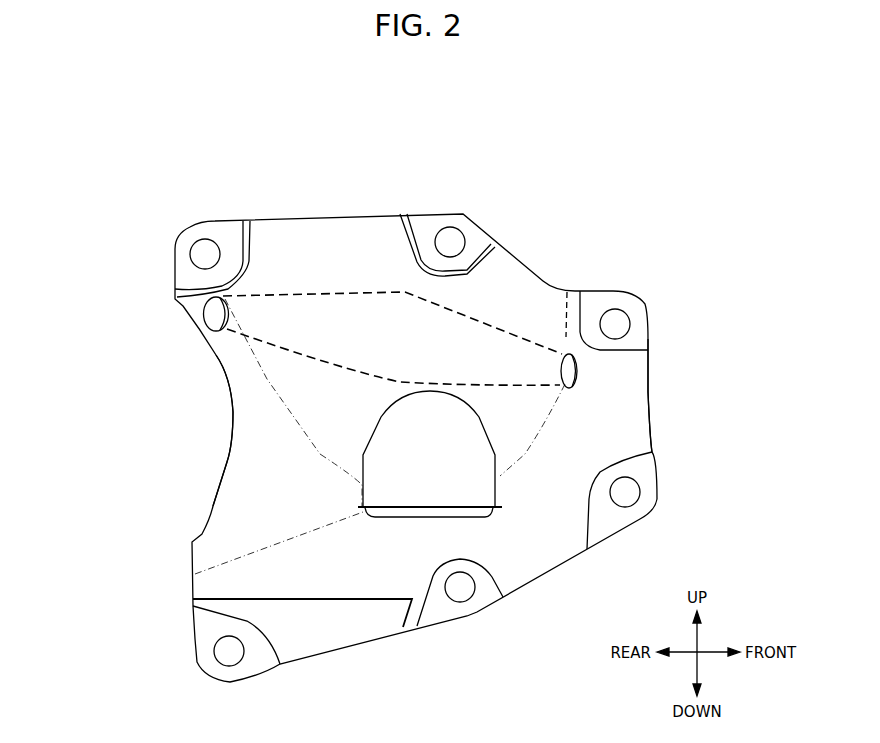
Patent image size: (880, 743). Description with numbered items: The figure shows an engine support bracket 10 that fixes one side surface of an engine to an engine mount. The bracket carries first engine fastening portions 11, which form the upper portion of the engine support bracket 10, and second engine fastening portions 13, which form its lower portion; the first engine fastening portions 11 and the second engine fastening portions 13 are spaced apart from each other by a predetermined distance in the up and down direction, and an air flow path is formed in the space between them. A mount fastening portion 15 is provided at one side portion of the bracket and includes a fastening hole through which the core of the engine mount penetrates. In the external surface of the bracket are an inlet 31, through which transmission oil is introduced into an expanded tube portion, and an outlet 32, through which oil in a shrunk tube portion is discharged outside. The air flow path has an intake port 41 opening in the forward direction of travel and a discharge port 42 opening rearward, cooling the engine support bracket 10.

The engine support bracket 10 is at (163, 129).
The first engine fastening portions 11 is at (210, 252).
The second engine fastening portions 13 is at (229, 652).
The mount fastening portion 15 is at (405, 517).
The inlet 31 is at (569, 372).
The outlet 32 is at (216, 315).
The intake port 41 is at (651, 398).
The discharge port 42 is at (210, 430).